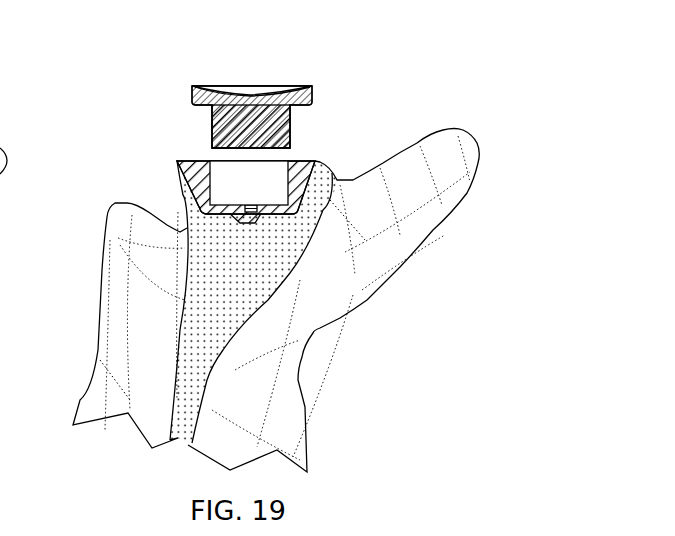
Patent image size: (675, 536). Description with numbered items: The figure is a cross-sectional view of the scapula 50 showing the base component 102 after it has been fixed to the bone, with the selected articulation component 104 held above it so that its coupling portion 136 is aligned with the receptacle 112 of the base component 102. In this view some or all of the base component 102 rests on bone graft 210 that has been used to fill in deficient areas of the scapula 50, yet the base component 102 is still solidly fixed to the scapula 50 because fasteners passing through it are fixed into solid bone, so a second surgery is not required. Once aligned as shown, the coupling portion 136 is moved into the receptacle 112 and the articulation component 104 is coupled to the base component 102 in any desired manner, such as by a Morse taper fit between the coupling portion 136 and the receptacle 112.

The scapula 50 is at (100, 260).
The base component 102 is at (190, 163).
The articulation component 104 is at (294, 95).
The receptacle 112 is at (226, 178).
The coupling portion 136 is at (290, 138).
The bone graft 210 is at (253, 223).